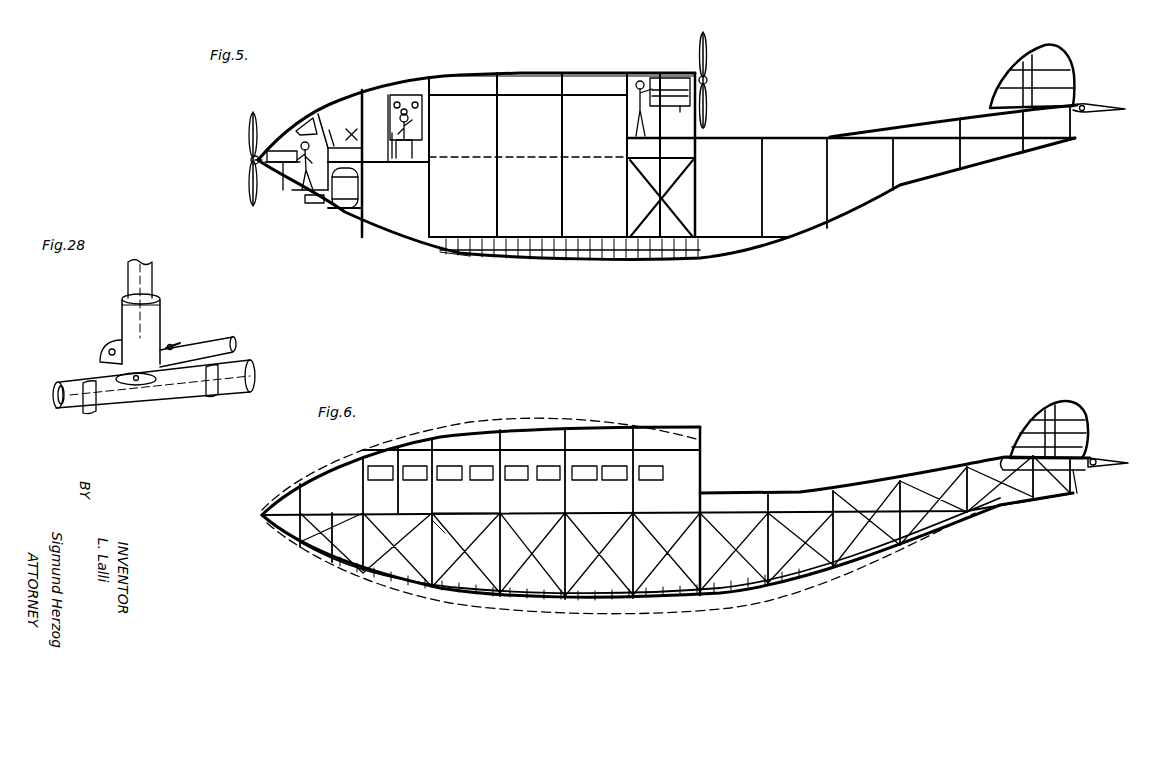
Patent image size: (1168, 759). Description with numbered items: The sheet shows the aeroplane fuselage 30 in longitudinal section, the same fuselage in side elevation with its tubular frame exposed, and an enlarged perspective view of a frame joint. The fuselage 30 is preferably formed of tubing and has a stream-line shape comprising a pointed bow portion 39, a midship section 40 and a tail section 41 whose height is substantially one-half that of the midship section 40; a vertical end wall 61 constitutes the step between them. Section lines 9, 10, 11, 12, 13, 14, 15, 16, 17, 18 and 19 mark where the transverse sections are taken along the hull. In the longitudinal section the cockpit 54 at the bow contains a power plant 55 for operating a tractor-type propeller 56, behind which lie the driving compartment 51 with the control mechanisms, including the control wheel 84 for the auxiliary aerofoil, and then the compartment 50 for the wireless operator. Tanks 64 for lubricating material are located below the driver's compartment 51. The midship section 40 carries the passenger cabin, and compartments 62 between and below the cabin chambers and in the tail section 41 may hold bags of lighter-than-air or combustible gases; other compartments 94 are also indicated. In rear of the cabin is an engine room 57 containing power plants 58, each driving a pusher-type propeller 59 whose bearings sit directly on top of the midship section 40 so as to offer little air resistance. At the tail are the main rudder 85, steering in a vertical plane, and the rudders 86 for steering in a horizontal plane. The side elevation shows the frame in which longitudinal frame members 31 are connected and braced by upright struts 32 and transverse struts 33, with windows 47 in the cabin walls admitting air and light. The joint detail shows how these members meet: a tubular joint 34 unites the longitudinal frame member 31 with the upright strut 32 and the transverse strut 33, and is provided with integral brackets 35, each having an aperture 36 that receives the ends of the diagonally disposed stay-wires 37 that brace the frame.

In FIG. 5, the section line 9— 9 is at (293, 242).
In FIG. 5, the section line 10— 10 is at (329, 254).
In FIG. 5, the section line 11— 11 is at (362, 268).
In FIG. 5, the section line 12— 12 is at (428, 278).
In FIG. 5, the section line 13— 13 is at (494, 293).
In FIG. 5, the section line 14— 14 is at (688, 300).
In FIG. 5, the section line 15— 15 is at (705, 300).
In FIG. 5, the section line 16— 16 is at (827, 268).
In FIG. 5, the section line 17— 17 is at (893, 233).
In FIG. 5, the section line 18— 18 is at (1023, 188).
In FIG. 5, the section line 19— 19 is at (1083, 168).
In FIG. 6, the fuselage 30 is at (681, 470).
In FIG. 28, the longitudinal frame members 31 is at (254, 378).
In FIG. 6, the longitudinal frame members 31 is at (584, 427).
In FIG. 28, the upright struts 32 is at (153, 272).
In FIG. 6, the upright struts 32 is at (498, 494).
In FIG. 28, the transverse struts 33 is at (232, 339).
In FIG. 28, the tubular joints 34 is at (122, 321).
In FIG. 28, the brackets 35 is at (165, 332).
In FIG. 28, the aperture 36 is at (140, 388).
In FIG. 28, the stay-wires 37 is at (180, 343).
In FIG. 6, the stay-wires 37 is at (442, 532).
In FIG. 5, the bow portion 39 is at (262, 170).
In FIG. 5, the midship section 40 is at (586, 72).
In FIG. 5, the tail section 41 is at (795, 137).
In FIG. 6, the windows 47 is at (480, 464).
In FIG. 5, the wireless operator compartment 50 is at (374, 104).
In FIG. 5, the driving compartment 51 is at (344, 113).
In FIG. 5, the cockpit 54 is at (296, 190).
In FIG. 5, the power plant 55 is at (283, 151).
In FIG. 5, the propeller 56 is at (248, 128).
In FIG. 5, the engine room 57 is at (660, 77).
In FIG. 5, the power plants 58 is at (670, 106).
In FIG. 5, the propeller 59 is at (706, 45).
In FIG. 5, the vertical end wall 61 is at (712, 138).
In FIG. 5, the compartments 62 is at (649, 155).
In FIG. 5, the tanks 64 is at (355, 192).
In FIG. 5, the control wheel 84 is at (343, 130).
In FIG. 5, the main rudder 85 is at (1122, 108).
In FIG. 5, the rudders 86 is at (1062, 54).
In FIG. 5, the compartments 94 is at (403, 226).